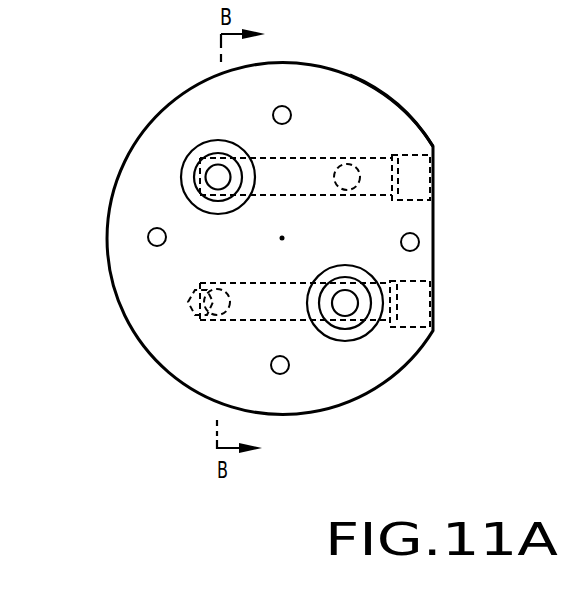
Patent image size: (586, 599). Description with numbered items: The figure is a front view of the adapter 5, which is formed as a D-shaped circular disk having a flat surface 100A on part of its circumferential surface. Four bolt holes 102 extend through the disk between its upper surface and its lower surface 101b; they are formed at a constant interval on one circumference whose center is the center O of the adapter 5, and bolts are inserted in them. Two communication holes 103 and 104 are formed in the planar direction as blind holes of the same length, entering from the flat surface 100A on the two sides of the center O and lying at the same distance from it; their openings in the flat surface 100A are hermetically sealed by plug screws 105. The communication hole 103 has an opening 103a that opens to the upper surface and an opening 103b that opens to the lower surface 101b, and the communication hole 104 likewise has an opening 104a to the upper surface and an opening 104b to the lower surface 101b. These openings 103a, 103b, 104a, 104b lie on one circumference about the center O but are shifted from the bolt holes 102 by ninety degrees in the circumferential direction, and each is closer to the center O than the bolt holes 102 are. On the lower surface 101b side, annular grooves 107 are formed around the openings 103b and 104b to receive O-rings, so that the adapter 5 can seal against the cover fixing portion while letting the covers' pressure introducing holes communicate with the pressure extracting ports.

The adapter 5 is at (289, 236).
The flat surface 100A is at (433, 217).
The lower surface 101b is at (393, 118).
The bolt holes 102 is at (282, 106).
The communication hole 103 is at (232, 327).
The opening 103a is at (202, 322).
The opening 103b is at (343, 312).
The communication hole 104 is at (372, 158).
The opening 104a is at (350, 165).
The opening 104b is at (213, 172).
The plug screws 105 is at (420, 182).
The annular grooves 107 is at (188, 162).
The center O is at (282, 238).